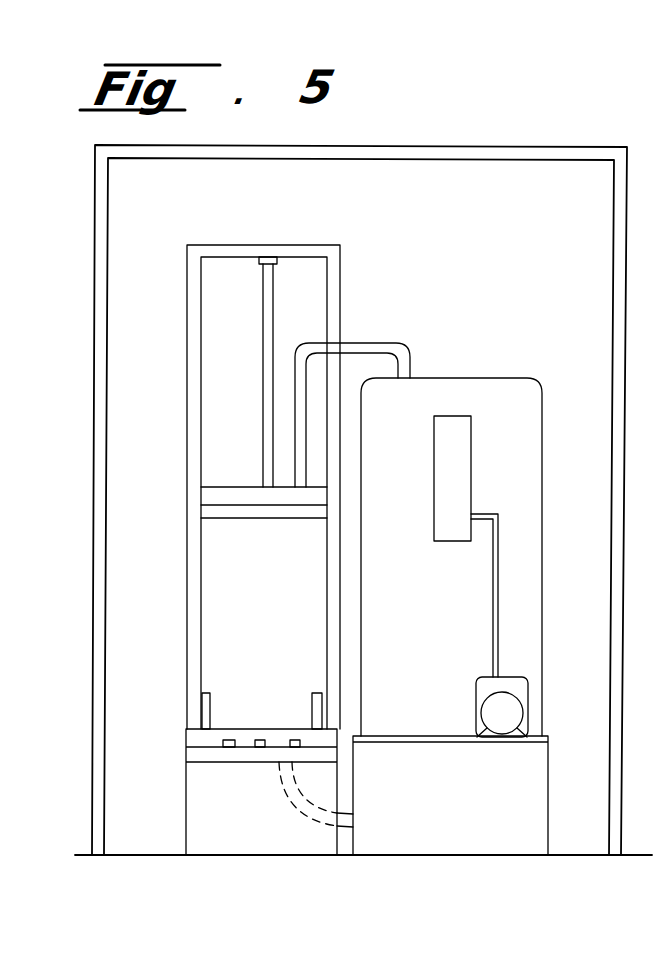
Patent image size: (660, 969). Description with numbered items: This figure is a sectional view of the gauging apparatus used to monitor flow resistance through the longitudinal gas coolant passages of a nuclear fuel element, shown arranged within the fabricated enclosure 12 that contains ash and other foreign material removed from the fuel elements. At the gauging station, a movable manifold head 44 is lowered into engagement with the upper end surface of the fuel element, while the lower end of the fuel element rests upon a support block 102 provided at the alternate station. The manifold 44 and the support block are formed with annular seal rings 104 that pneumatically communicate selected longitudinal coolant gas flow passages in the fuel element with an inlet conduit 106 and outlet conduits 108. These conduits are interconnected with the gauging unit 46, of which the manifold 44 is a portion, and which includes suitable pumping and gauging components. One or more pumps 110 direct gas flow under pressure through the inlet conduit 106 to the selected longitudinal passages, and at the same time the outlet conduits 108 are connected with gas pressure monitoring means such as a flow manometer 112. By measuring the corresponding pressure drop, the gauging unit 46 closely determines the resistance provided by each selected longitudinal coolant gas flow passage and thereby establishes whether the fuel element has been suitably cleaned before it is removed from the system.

The enclosure 12 is at (556, 150).
The movable manifold head 44 is at (243, 509).
The gauging unit 46 is at (487, 379).
The support block 102 is at (215, 729).
The annular seal rings 104 is at (242, 740).
The inlet conduit 106 is at (377, 347).
The outlet conduits 108 is at (292, 812).
The pumps 110 is at (476, 700).
The flow manometer 112 is at (458, 462).